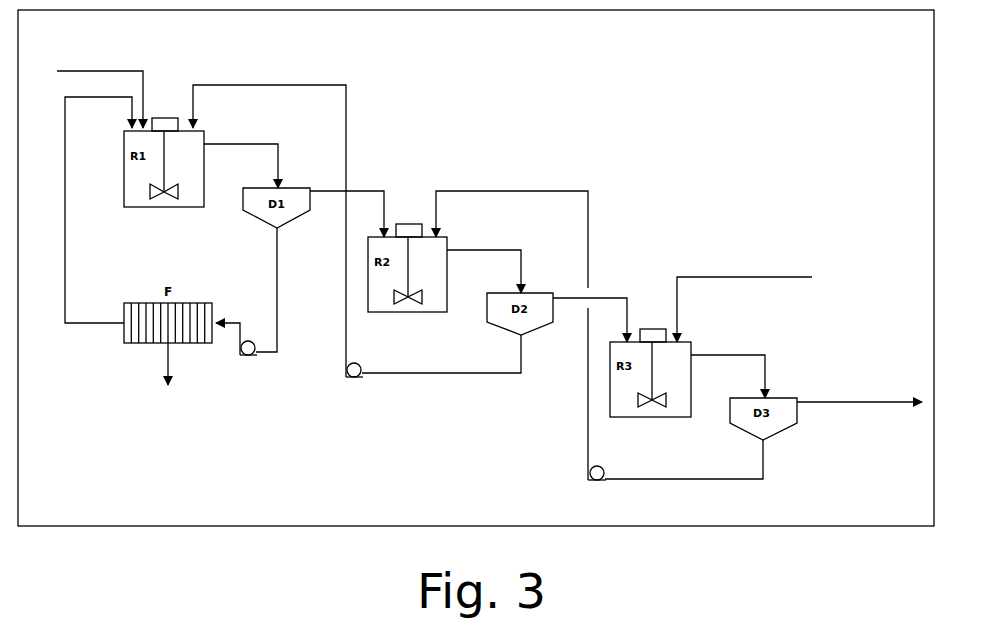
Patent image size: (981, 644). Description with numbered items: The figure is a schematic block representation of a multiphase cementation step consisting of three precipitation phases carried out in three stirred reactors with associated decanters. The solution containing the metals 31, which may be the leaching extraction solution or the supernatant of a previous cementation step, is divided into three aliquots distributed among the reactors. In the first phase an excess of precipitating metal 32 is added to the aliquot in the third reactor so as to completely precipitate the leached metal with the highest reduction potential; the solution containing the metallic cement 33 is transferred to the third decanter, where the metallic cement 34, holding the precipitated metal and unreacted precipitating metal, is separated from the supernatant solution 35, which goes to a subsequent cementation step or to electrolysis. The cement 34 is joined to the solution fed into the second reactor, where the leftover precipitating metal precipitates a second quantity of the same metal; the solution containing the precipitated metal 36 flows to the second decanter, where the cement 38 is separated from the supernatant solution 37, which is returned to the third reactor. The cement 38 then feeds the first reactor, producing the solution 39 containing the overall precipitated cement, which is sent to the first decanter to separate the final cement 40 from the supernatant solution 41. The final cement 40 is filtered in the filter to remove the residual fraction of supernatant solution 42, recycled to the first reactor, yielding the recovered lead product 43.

The solution containing the metals 31 is at (110, 71).
The precipitating metal 32 is at (782, 277).
The solution containing the metallic cement 33 is at (743, 354).
The metallic cement 34 is at (765, 456).
The supernatant solution 35 is at (860, 403).
The solution containing the precipitated metal 36 is at (488, 249).
The supernatant solution 37 is at (577, 293).
The cement 38 is at (520, 345).
The solution containing the precipitated cement 39 is at (240, 143).
The final cement 40 is at (277, 248).
The supernatant solution 41 is at (359, 190).
The residual fraction of supernatant solution 42 is at (65, 259).
The lead product stream 43 is at (167, 362).